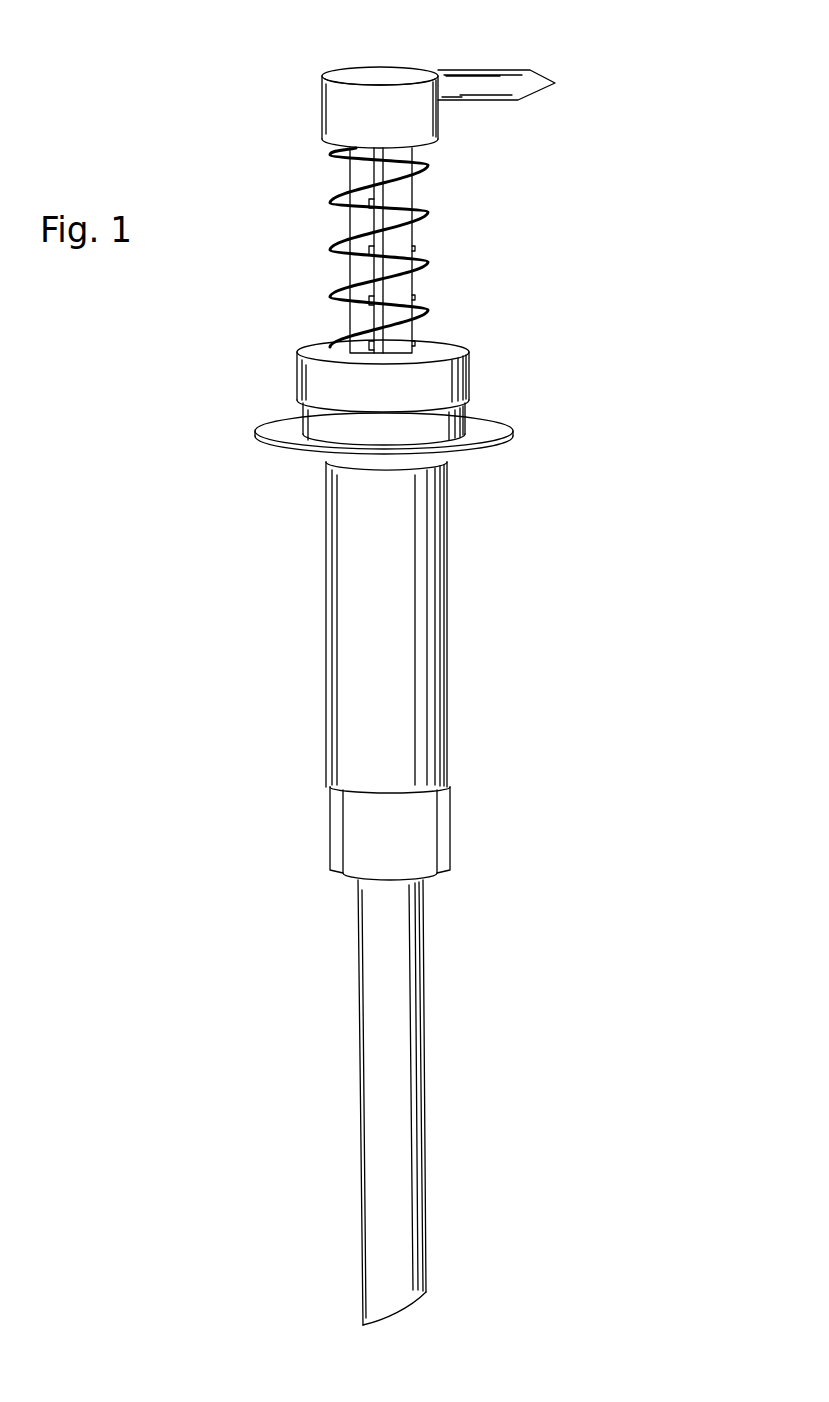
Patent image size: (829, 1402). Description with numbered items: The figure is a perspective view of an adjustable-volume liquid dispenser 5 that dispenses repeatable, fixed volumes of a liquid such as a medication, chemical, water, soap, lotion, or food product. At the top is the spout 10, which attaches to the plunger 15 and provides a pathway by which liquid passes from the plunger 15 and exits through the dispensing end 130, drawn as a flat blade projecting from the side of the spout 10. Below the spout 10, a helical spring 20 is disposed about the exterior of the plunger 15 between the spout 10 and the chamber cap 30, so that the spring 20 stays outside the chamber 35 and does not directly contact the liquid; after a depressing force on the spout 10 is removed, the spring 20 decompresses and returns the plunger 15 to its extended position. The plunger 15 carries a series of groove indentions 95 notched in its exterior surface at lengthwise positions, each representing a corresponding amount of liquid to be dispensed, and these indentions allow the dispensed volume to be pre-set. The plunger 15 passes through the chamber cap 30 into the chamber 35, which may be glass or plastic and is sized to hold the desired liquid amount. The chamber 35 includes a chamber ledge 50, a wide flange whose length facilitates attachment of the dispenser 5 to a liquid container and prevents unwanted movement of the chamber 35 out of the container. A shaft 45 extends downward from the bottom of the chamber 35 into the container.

The adjustable-volume liquid dispenser 5 is at (598, 220).
The spout 10 is at (400, 76).
The dispensing end 130 is at (555, 82).
The plunger 15 is at (400, 294).
The groove indentions 95 is at (380, 205).
The spring 20 is at (433, 262).
The chamber cap 30 is at (472, 370).
The chamber ledge 50 is at (257, 439).
The chamber 35 is at (326, 603).
The shaft 45 is at (425, 1034).